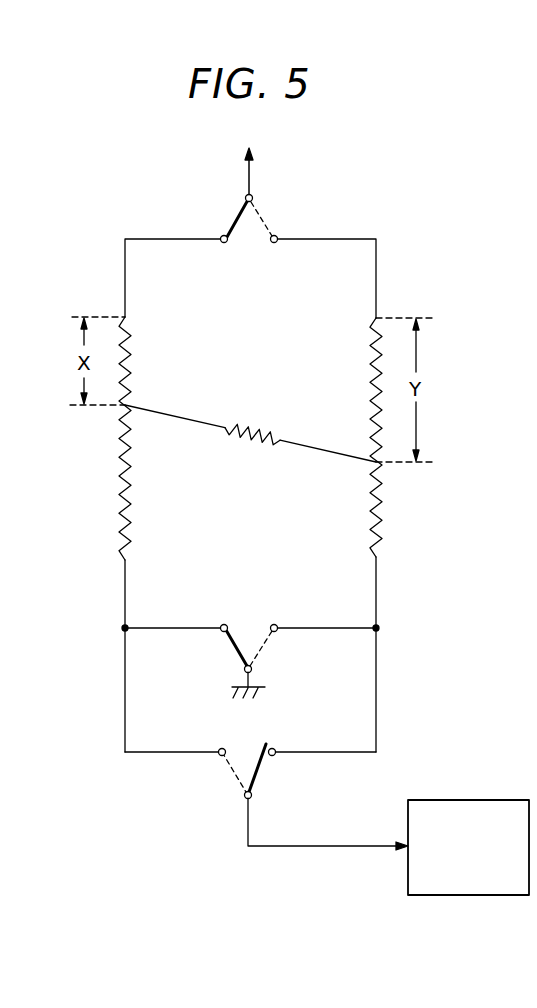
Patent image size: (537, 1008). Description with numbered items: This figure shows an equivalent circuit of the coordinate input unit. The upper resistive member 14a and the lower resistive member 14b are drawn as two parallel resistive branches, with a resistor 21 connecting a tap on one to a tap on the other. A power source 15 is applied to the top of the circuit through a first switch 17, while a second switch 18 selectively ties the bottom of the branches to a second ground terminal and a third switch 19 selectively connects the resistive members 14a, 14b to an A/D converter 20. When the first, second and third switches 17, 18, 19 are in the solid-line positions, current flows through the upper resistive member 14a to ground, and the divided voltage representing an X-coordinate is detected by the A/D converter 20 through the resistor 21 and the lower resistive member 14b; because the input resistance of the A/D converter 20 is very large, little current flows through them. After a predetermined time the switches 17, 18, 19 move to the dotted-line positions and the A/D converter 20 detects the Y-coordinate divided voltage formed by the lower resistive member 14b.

The upper resistive member 14a is at (119, 463).
The lower resistive member 14b is at (382, 512).
The power source 15 is at (247, 180).
The first switch 17 is at (270, 213).
The second switch 18 is at (266, 645).
The third switch 19 is at (262, 774).
The A/D converter 20 is at (515, 799).
The resistor 21 is at (259, 446).